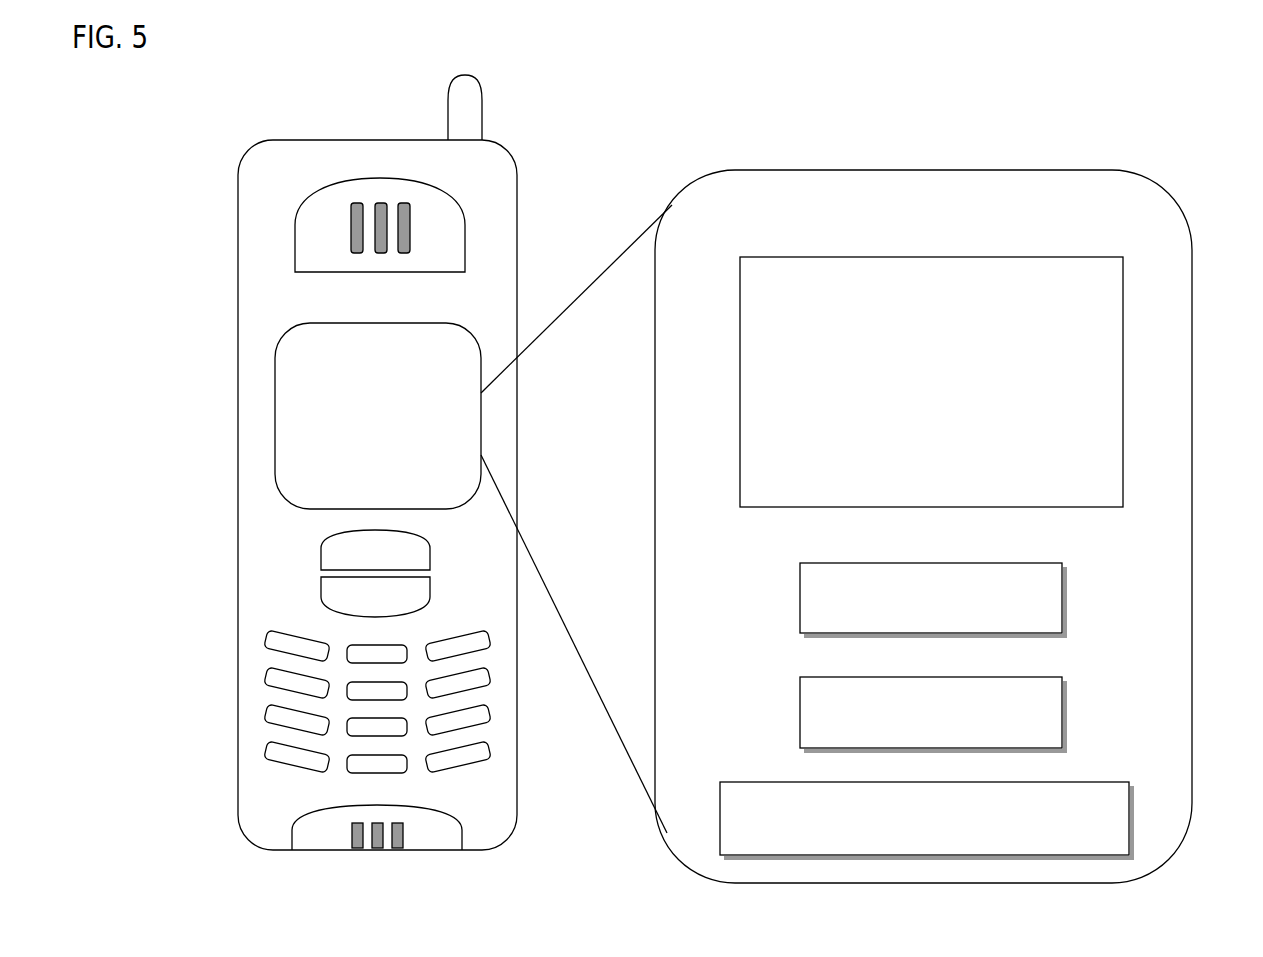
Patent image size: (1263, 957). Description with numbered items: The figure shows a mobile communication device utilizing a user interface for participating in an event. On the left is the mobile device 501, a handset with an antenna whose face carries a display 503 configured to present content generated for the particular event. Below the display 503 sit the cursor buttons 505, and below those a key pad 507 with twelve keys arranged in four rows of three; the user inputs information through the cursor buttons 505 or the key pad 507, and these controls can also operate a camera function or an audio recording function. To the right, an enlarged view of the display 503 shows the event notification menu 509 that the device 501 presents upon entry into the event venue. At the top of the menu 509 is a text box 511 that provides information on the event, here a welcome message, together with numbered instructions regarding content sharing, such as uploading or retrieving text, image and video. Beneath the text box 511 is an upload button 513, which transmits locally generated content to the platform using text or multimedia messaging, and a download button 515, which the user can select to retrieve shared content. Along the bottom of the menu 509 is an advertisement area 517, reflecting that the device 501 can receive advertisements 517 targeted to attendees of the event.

The mobile device 501 is at (517, 193).
The display 503 is at (275, 387).
The cursor buttons 505 is at (320, 560).
The key pad 507 is at (227, 622).
The event notification menu 509 is at (973, 170).
The text box 511 is at (1050, 257).
The upload button 513 is at (1063, 598).
The download button 515 is at (1063, 713).
The advertisements 517 is at (1130, 818).